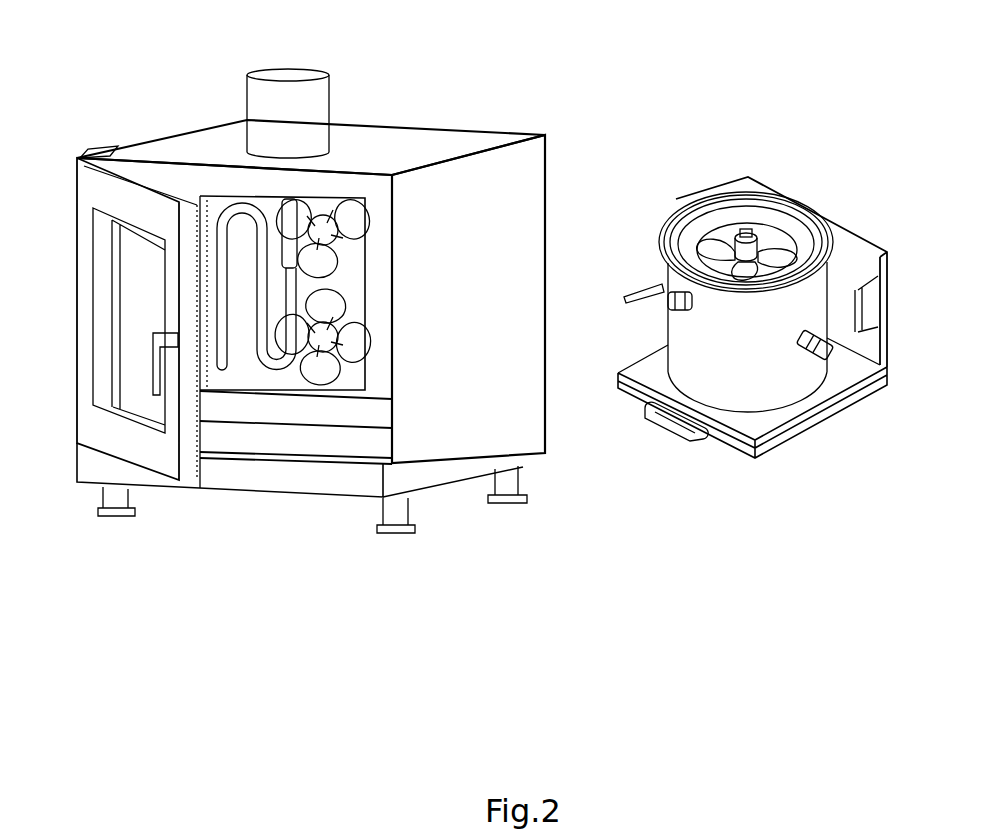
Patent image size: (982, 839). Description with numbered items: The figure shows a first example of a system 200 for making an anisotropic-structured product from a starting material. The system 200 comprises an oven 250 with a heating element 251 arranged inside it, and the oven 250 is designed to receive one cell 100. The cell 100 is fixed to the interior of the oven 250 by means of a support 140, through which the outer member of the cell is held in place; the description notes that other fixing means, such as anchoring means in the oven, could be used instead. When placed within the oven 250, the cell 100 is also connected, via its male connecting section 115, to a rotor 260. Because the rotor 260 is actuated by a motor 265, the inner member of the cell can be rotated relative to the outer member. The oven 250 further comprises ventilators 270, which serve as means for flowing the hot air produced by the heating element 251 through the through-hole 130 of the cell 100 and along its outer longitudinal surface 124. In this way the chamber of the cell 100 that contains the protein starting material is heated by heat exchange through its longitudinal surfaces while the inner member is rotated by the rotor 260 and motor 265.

The system 200 is at (505, 655).
The oven 250 is at (488, 540).
The heating element 251 is at (288, 200).
The rotor 260 is at (218, 203).
The motor 265 is at (305, 110).
The ventilators 270 is at (352, 231).
The cell 100 is at (684, 520).
The outer longitudinal surface 124 is at (697, 347).
The through-hole 130 is at (718, 247).
The male connecting section 115 is at (752, 246).
The support 140 is at (838, 410).